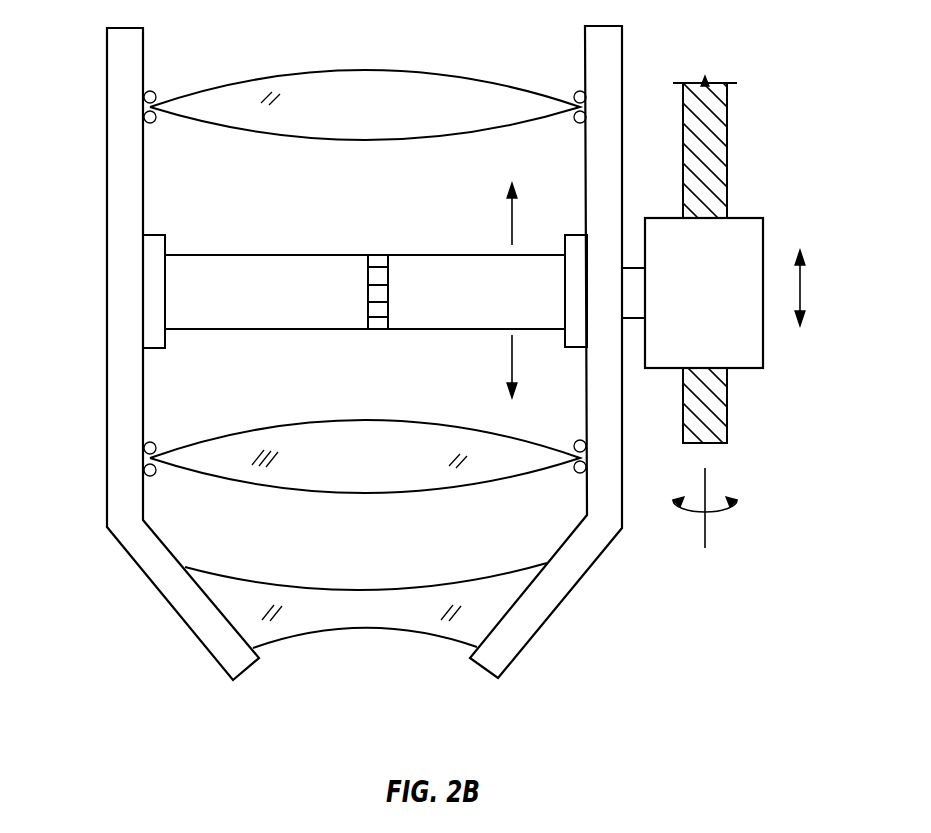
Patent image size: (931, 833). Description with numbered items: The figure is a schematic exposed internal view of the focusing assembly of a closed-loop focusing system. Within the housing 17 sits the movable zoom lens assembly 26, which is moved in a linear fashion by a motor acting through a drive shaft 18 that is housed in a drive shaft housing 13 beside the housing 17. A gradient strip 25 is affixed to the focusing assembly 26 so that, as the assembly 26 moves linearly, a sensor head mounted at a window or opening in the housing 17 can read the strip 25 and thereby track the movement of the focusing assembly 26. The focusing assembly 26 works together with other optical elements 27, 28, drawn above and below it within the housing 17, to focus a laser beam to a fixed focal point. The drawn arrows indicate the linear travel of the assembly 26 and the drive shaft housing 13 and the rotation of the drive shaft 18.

The drive shaft housing 13 is at (735, 216).
The housing 17 is at (107, 237).
The drive shaft 18 is at (727, 135).
The gradient strip 25 is at (368, 300).
The movable zoom lens assembly 26 is at (428, 253).
The optical element 27 is at (449, 73).
The optical element 28 is at (433, 488).